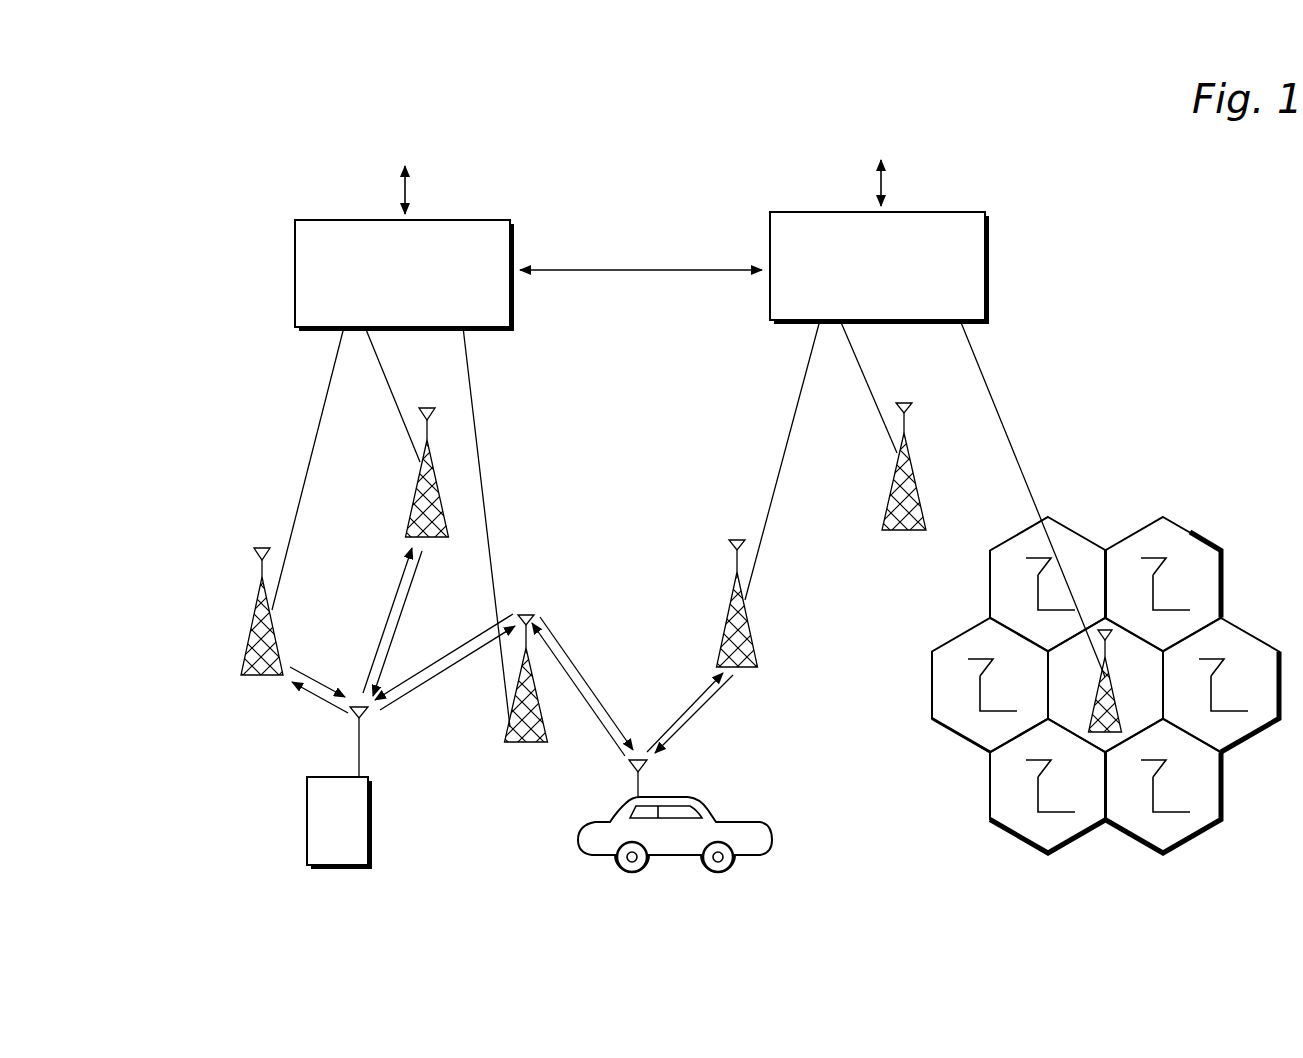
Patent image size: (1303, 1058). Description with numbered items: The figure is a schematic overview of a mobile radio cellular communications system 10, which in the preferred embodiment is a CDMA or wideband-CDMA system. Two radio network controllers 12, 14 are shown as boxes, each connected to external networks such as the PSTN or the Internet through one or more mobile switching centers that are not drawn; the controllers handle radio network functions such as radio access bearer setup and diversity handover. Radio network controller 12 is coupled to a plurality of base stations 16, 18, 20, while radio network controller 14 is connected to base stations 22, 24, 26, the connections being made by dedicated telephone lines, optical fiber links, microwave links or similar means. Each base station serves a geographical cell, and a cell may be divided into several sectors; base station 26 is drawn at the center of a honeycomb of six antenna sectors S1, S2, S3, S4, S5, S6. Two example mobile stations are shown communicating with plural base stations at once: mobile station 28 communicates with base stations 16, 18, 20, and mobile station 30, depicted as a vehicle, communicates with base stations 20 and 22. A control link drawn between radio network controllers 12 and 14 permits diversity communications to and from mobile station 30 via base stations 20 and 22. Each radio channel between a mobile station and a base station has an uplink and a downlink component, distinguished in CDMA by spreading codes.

The mobile radio cellular communications system 10 is at (204, 273).
The radio network controller 12 is at (514, 233).
The radio network controller 14 is at (989, 226).
The base station 16 is at (253, 611).
The base station 18 is at (420, 482).
The base station 20 is at (510, 730).
The base station 22 is at (748, 630).
The base station 24 is at (913, 478).
The base station 26 is at (1117, 710).
The mobile station 28 is at (372, 845).
The mobile station 30 is at (712, 815).
The antenna sector S1 is at (1185, 529).
The antenna sector S2 is at (1008, 540).
The antenna sector S3 is at (963, 737).
The antenna sector S4 is at (1080, 836).
The antenna sector S5 is at (1210, 826).
The antenna sector S6 is at (1248, 633).